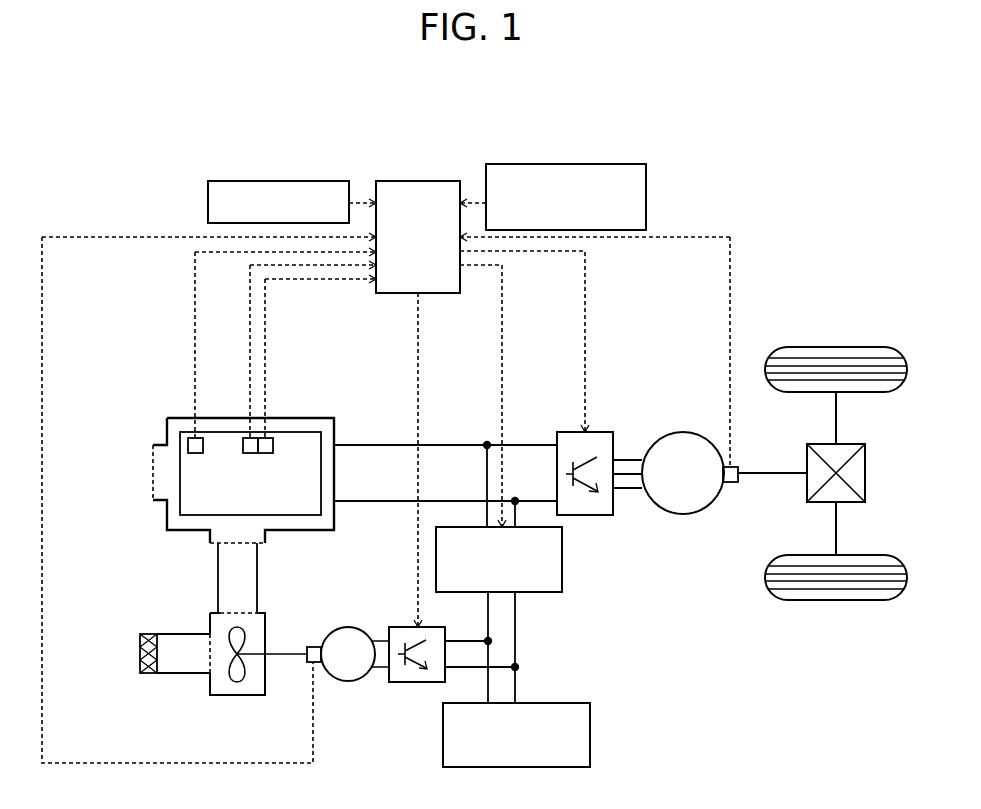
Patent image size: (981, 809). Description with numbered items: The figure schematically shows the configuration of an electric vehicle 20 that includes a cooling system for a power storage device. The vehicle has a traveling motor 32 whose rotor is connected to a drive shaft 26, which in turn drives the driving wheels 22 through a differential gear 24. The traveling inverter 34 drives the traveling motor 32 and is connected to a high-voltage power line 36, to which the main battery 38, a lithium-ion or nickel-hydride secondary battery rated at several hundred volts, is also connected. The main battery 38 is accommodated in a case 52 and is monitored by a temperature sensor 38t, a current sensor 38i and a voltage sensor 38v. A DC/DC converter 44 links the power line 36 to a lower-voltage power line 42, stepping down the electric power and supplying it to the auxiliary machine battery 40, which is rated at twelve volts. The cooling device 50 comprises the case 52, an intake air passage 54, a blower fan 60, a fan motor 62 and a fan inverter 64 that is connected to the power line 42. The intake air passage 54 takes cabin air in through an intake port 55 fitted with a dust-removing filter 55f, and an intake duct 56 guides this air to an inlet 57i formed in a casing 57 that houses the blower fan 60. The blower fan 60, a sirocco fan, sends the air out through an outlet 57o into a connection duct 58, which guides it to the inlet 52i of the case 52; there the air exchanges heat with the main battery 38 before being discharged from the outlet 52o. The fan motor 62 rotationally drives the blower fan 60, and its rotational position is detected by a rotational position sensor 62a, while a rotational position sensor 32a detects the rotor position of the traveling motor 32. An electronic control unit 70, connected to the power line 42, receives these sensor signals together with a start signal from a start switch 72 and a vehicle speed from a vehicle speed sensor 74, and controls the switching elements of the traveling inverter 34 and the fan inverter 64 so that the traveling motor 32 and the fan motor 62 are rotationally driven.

The electric vehicle 20 is at (556, 128).
The driving wheels 22 is at (836, 347).
The differential gear 24 is at (855, 444).
The drive shaft 26 is at (780, 473).
The traveling motor 32 is at (683, 514).
The rotational position sensor 32a is at (731, 482).
The traveling inverter 34 is at (607, 432).
The power line 36 is at (473, 501).
The main battery 38 is at (334, 471).
The temperature sensor 38t is at (188, 438).
The current sensor 38i is at (245, 438).
The voltage sensor 38v is at (270, 438).
The auxiliary machine battery 40 is at (592, 737).
The power line 42 is at (518, 618).
The DC/DC converter 44 is at (562, 556).
The cooling device 50 is at (112, 404).
The case 52 is at (167, 513).
The outlet 52o is at (151, 472).
The inlet 52i is at (238, 546).
The intake air passage 54 is at (125, 552).
The intake port 55 is at (117, 664).
The filter 55f is at (140, 647).
The intake duct 56 is at (203, 631).
The casing 57 is at (207, 611).
The outlet 57o is at (240, 612).
The inlet 57i is at (207, 656).
The connection duct 58 is at (216, 571).
The blower fan 60 is at (237, 683).
The fan motor 62 is at (348, 682).
The rotational position sensor 62a is at (313, 647).
The fan inverter 64 is at (405, 683).
The electronic control unit 70 is at (417, 181).
The start switch 72 is at (208, 202).
The vehicle speed sensor 74 is at (646, 201).